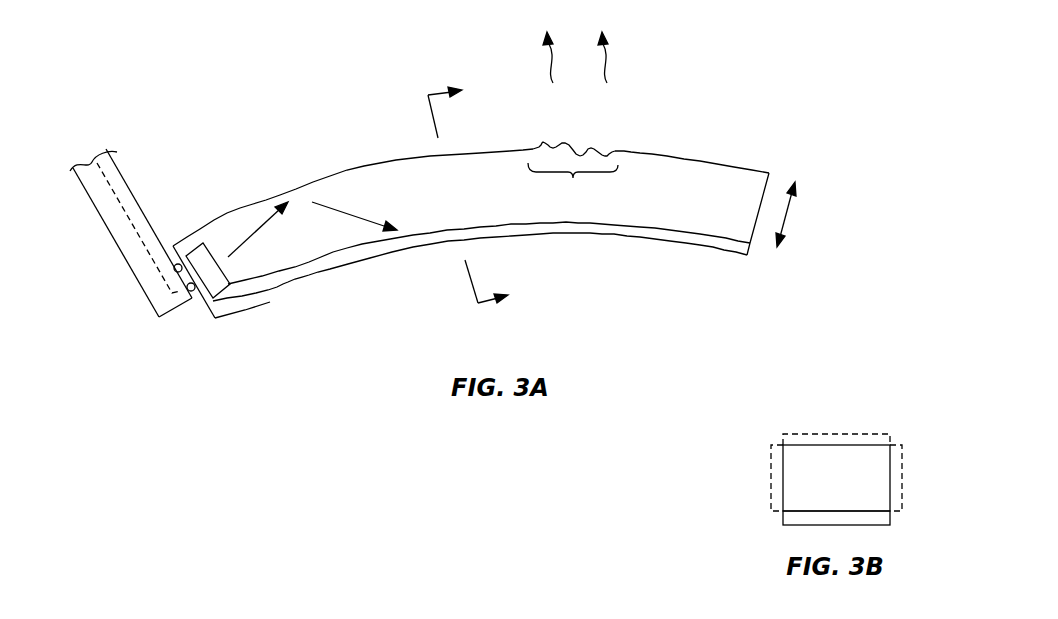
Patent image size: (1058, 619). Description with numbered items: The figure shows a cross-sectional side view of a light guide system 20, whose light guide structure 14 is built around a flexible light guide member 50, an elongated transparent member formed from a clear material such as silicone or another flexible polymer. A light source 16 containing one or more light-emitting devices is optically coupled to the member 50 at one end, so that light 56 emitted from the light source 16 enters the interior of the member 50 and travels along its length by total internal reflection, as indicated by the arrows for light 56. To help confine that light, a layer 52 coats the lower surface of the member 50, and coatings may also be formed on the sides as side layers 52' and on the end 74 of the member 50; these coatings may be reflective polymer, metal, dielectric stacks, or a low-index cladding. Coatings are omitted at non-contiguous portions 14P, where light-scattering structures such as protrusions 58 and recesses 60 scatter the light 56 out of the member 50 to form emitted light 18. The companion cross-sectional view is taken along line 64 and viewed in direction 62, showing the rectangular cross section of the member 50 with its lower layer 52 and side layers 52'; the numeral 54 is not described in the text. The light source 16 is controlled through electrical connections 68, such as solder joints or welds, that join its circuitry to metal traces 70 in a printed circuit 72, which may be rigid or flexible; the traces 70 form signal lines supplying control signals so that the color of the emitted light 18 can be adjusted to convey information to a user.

In FIG. 3A, the light guide structure 14 is at (505, 203).
In FIG. 3A, the portions 14P is at (573, 178).
In FIG. 3A, the light source 16 is at (222, 277).
In FIG. 3A, the emitted light 18 is at (543, 61).
In FIG. 3A, the light guide system 20 is at (258, 75).
In FIG. 3A, the light guide member 50 is at (471, 167).
In FIG. 3A, the layer 52 is at (481, 270).
In FIG. 3B, the layer 52 is at (804, 526).
In FIG. 3B, the side layers 52' is at (832, 478).
In FIG. 3A, the band thickness / stretchable layer 54 is at (790, 214).
In FIG. 3B, the band thickness / stretchable layer 54 is at (793, 472).
In FIG. 3A, the light 56 is at (340, 214).
In FIG. 3A, the protrusions 58 is at (565, 142).
In FIG. 3A, the recesses 60 is at (589, 138).
In FIG. 3A, the direction 62 is at (442, 90).
In FIG. 3A, the line 64 is at (432, 119).
In FIG. 3A, the electrical connections 68 is at (191, 292).
In FIG. 3A, the metal traces 70 is at (148, 256).
In FIG. 3A, the printed circuit 72 is at (118, 233).
In FIG. 3A, the end 74 is at (758, 226).